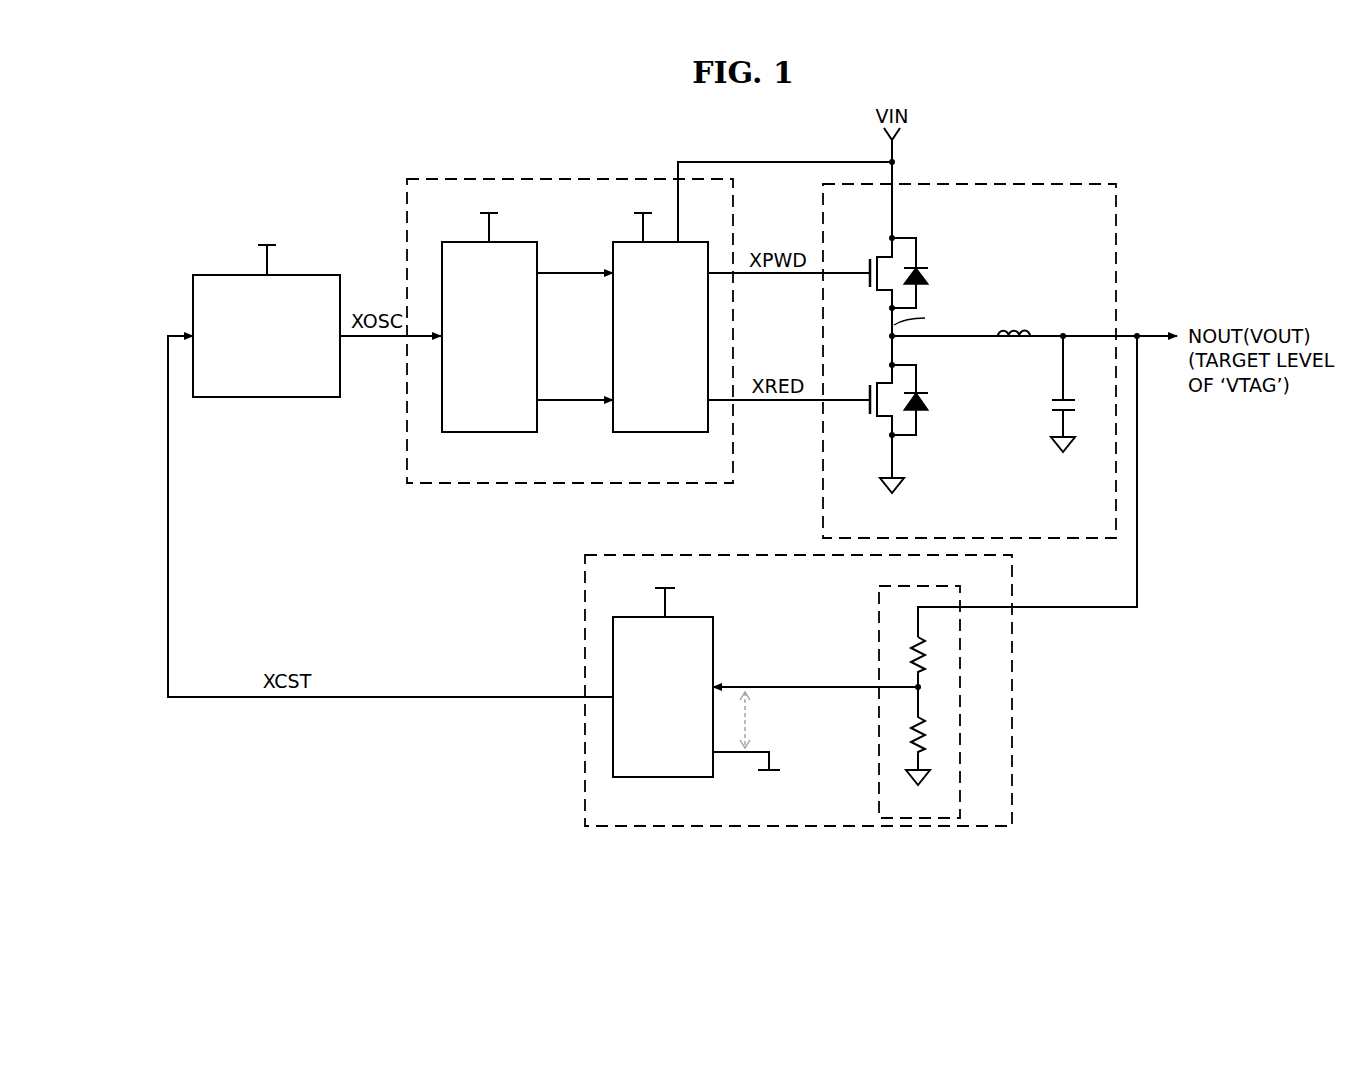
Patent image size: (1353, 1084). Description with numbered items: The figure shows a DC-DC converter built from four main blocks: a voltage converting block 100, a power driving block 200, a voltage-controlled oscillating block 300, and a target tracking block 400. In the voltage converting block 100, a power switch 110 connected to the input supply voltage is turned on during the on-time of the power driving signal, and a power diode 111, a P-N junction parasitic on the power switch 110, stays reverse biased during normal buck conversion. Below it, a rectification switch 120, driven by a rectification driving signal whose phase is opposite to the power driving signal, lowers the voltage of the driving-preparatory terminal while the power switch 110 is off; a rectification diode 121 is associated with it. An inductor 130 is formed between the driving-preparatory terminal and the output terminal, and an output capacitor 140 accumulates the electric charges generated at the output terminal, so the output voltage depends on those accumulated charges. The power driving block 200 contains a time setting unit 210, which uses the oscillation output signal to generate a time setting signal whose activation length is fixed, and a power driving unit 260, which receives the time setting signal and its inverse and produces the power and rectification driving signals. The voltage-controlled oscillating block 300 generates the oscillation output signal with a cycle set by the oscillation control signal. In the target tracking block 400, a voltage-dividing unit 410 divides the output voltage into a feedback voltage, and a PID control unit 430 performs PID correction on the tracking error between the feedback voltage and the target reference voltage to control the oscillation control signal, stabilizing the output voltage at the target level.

The voltage converting block 100 is at (1040, 184).
The power switch 110 is at (872, 257).
The power diode 111 is at (928, 261).
The rectification switch 120 is at (873, 384).
The rectification diode 121 is at (928, 400).
The inductor 130 is at (1013, 328).
The output capacitor 140 is at (1050, 401).
The power driving block 200 is at (577, 179).
The time setting unit 210 is at (490, 432).
The power driving unit 260 is at (663, 432).
The voltage-controlled oscillating block 300 is at (320, 275).
The target tracking block 400 is at (1012, 728).
The voltage-dividing unit 410 is at (879, 625).
The PID control unit 430 is at (713, 638).